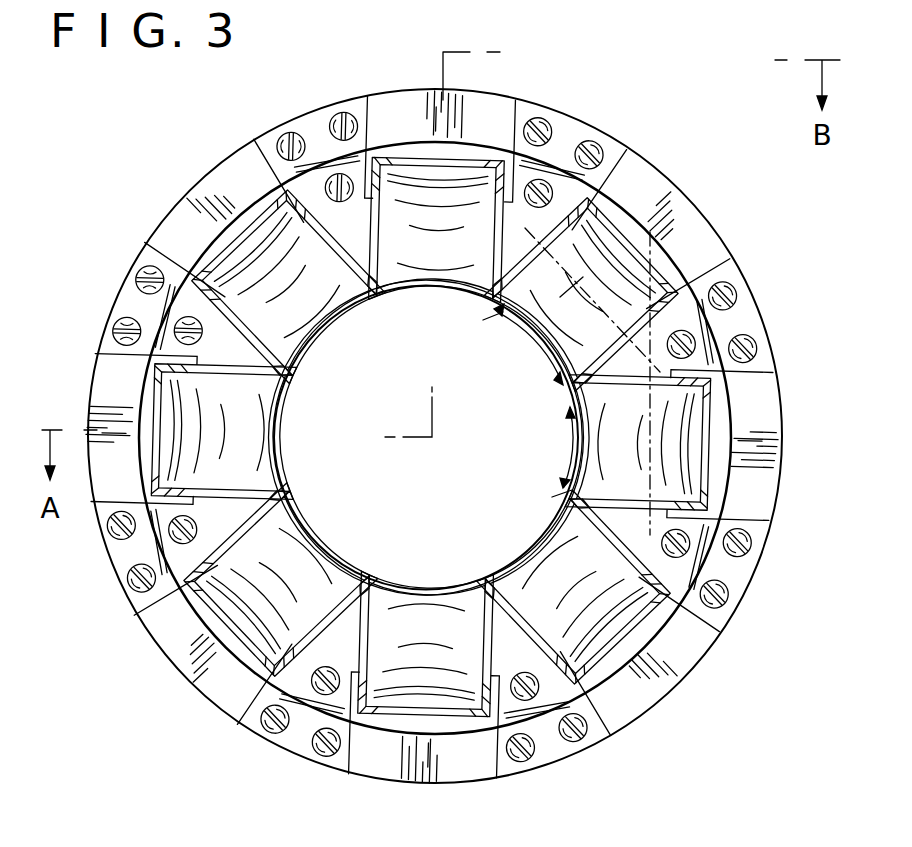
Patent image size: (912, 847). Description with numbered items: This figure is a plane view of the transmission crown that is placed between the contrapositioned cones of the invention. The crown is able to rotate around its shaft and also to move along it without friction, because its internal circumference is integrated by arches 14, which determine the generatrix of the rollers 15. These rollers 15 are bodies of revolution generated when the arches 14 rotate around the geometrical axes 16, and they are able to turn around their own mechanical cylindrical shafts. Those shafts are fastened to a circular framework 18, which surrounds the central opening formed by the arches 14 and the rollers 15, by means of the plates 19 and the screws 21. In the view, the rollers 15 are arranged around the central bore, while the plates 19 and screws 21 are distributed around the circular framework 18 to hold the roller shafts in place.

The arches 14 is at (576, 437).
The rollers 15 is at (520, 578).
The geometrical axes 16 is at (502, 318).
The circular framework 18 is at (217, 192).
The plates 19 is at (740, 323).
The screws 21 is at (177, 527).